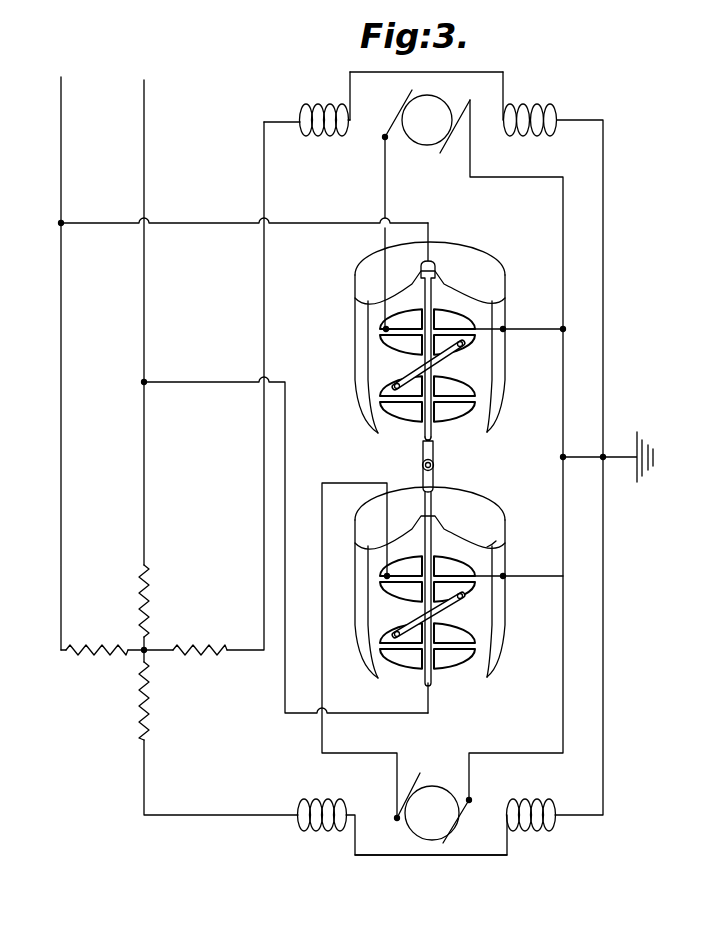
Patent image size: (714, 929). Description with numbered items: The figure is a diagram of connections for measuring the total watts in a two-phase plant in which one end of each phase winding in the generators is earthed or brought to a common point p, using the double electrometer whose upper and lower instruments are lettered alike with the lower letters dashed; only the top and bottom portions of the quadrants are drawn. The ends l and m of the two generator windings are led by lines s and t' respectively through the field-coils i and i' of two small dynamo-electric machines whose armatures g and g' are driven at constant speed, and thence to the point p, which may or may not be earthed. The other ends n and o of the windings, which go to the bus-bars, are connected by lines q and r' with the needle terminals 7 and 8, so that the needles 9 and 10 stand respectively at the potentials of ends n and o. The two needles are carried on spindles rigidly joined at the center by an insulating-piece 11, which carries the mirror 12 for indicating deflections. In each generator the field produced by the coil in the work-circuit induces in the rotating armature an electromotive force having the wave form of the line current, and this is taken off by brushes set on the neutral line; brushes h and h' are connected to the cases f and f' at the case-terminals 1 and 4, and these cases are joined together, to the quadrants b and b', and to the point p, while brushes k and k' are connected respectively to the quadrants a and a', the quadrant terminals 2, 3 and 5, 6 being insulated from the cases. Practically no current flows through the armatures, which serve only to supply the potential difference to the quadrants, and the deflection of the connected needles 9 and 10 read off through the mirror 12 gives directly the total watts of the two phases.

The field-coil i is at (436, 60).
The line s is at (307, 117).
The brush h is at (498, 126).
The brush k is at (393, 209).
The armature g is at (427, 120).
The line q is at (288, 226).
The winding end l is at (204, 388).
The winding end n is at (91, 653).
The winding end o is at (153, 592).
The winding end m is at (154, 710).
The inductance coils t' is at (392, 816).
The conductor r' is at (286, 557).
The quadrant terminal 5 is at (387, 531).
The brush k' is at (390, 795).
The armature g' is at (432, 838).
The brush h' is at (463, 821).
The field-coil i' is at (431, 872).
The common point p is at (607, 465).
The needle terminal 7 is at (432, 226).
The case f is at (412, 337).
The quadrant terminal 2 is at (391, 322).
The quadrant terminal 3 is at (472, 322).
The case-terminal 1 is at (520, 317).
The quadrants a is at (426, 372).
The quadrants b is at (455, 382).
The needle 9 is at (462, 350).
The insulating-piece 11 is at (433, 438).
The mirror 12 is at (434, 465).
The case f' is at (416, 582).
The quadrant terminal 6 is at (490, 546).
The case-terminal 4 is at (508, 575).
The quadrants a' is at (432, 620).
The quadrants b' is at (459, 621).
The needle 10 is at (463, 604).
The needle terminal 8 is at (432, 700).